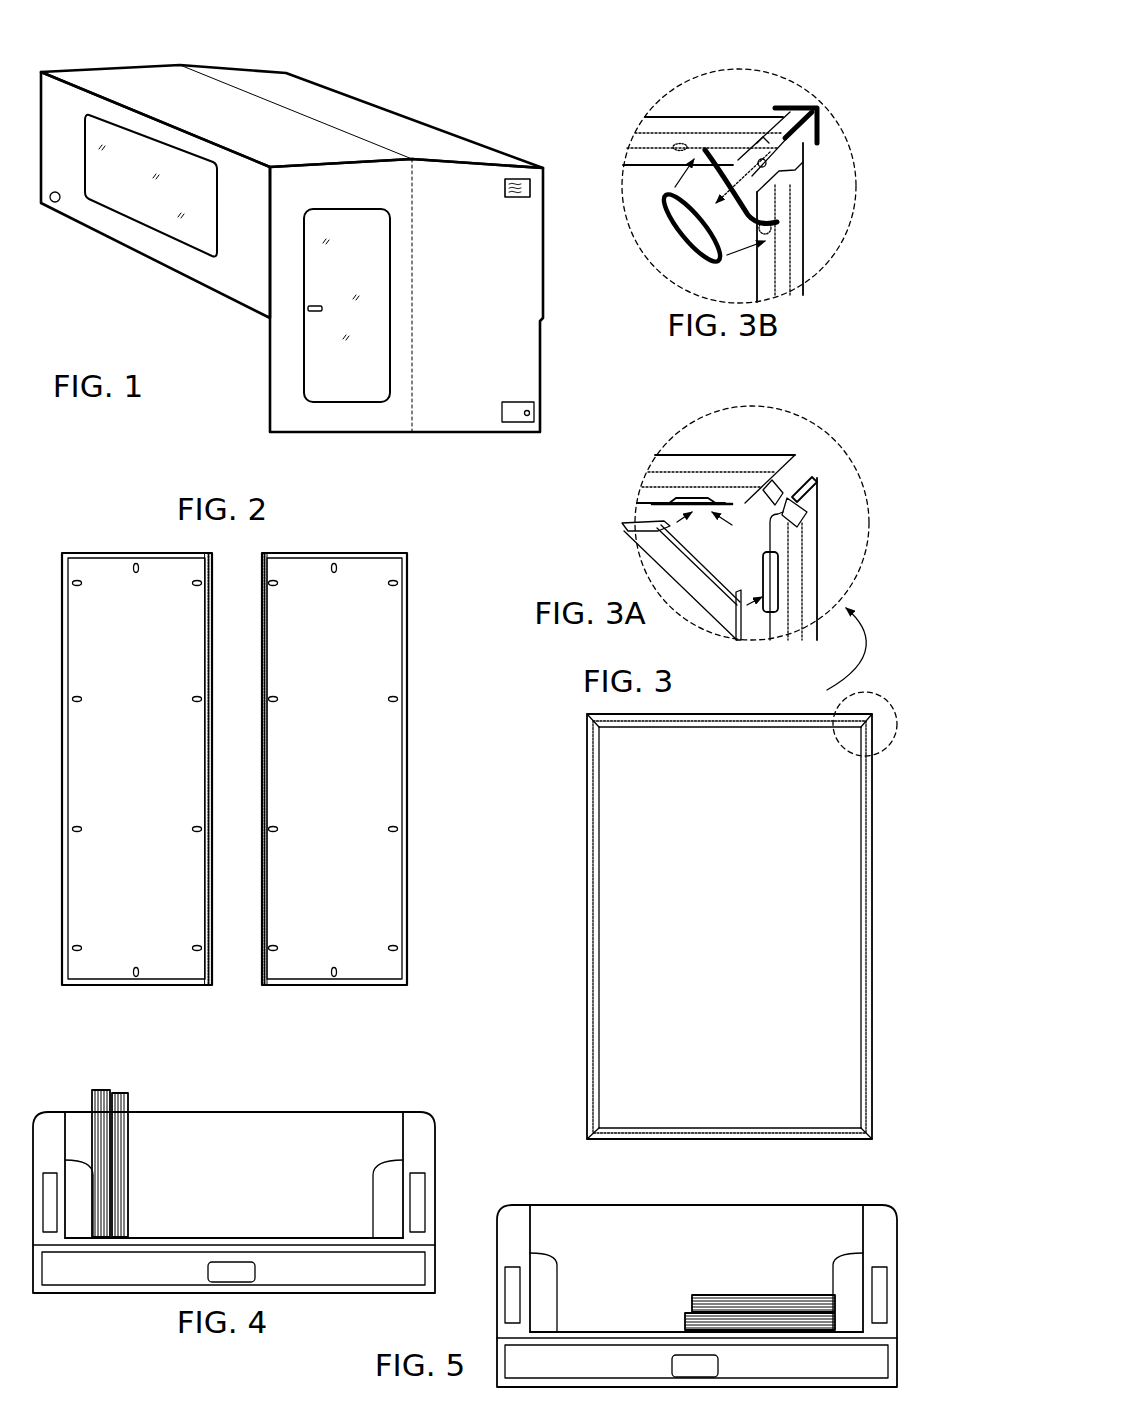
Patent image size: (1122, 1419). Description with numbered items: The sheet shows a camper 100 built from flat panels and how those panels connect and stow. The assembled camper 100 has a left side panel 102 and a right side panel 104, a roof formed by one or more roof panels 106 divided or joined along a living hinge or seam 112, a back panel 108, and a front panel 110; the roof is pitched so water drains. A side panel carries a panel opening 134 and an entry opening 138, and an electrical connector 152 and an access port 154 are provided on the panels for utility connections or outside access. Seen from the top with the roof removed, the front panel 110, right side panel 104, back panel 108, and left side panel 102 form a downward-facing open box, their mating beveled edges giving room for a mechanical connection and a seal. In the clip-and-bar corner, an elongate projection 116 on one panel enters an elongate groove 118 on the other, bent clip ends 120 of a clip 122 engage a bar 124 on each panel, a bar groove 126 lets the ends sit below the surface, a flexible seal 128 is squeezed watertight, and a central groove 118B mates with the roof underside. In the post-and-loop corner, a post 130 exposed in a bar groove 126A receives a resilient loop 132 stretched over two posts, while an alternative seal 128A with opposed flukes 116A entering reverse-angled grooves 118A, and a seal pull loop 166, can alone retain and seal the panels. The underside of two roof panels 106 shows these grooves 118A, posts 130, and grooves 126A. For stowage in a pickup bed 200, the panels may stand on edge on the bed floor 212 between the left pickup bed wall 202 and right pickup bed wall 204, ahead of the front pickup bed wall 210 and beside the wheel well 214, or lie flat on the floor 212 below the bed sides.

In FIG. 1, the camper 100 is at (432, 102).
In FIG. 4, the camper 100 is at (143, 1129).
In FIG. 5, the camper 100 is at (769, 1284).
In FIG. 1, the left side panel 102 is at (145, 243).
In FIG. 3, the left side panel 102 is at (600, 890).
In FIG. 4, the left side panel 102 is at (130, 1148).
In FIG. 5, the left side panel 102 is at (715, 1297).
In FIG. 3, the right side panel 104 is at (864, 962).
In FIG. 4, the right side panel 104 is at (126, 1186).
In FIG. 1, the roof panel 106 is at (338, 106).
In FIG. 2, the roof panel 106 is at (106, 667).
In FIG. 4, the roof panel 106 is at (121, 1118).
In FIG. 1, the back panel 108 is at (439, 422).
In FIG. 3, the back panel 108 is at (667, 1132).
In FIG. 4, the back panel 108 is at (104, 1089).
In FIG. 3, the front panel 110 is at (703, 728).
In FIG. 4, the front panel 110 is at (97, 1089).
In FIG. 5, the front panel 110 is at (685, 1329).
In FIG. 1, the living hinge or seam 112 is at (394, 143).
In FIG. 3A, the elongate projection 116 is at (787, 477).
In FIG. 2, the fluke 116A is at (78, 824).
In FIG. 3B, the fluke 116A is at (769, 124).
In FIG. 3A, the elongate groove 118 is at (802, 507).
In FIG. 2, the elongate groove 118A is at (264, 644).
In FIG. 3B, the elongate groove 118A is at (797, 177).
In FIG. 3, the elongate groove 118A is at (599, 836).
In FIG. 3A, the elongate groove 118B is at (686, 476).
In FIG. 3A, the clip ends 120 is at (622, 521).
In FIG. 3A, the clip 122 is at (665, 569).
In FIG. 3A, the bar 124 is at (760, 567).
In FIG. 3A, the bar groove 126 is at (704, 491).
In FIG. 2, the bar groove 126A is at (189, 582).
In FIG. 3B, the bar groove 126A is at (672, 141).
In FIG. 3A, the seal 128 is at (808, 471).
In FIG. 3B, the seal 128A is at (834, 110).
In FIG. 2, the post 130 is at (276, 580).
In FIG. 3B, the post 130 is at (705, 146).
In FIG. 3B, the resilient loop 132 is at (730, 170).
In FIG. 1, the panel opening 134 is at (518, 204).
In FIG. 1, the entry opening 138 is at (314, 357).
In FIG. 1, the electrical connector 152 is at (55, 204).
In FIG. 1, the access port 154 is at (512, 420).
In FIG. 3B, the seal pull loop 166 is at (742, 155).
In FIG. 4, the pickup bed 200 is at (285, 1097).
In FIG. 5, the pickup bed 200 is at (511, 1186).
In FIG. 5, the left pickup bed wall 202 is at (527, 1231).
In FIG. 4, the right pickup bed wall 204 is at (413, 1121).
In FIG. 5, the right pickup bed wall 204 is at (867, 1218).
In FIG. 4, the front pickup bed wall 210 is at (293, 1160).
In FIG. 5, the front pickup bed wall 210 is at (650, 1240).
In FIG. 4, the pickup bed floor 212 is at (264, 1235).
In FIG. 5, the pickup bed floor 212 is at (579, 1329).
In FIG. 4, the wheel well 214 is at (76, 1228).